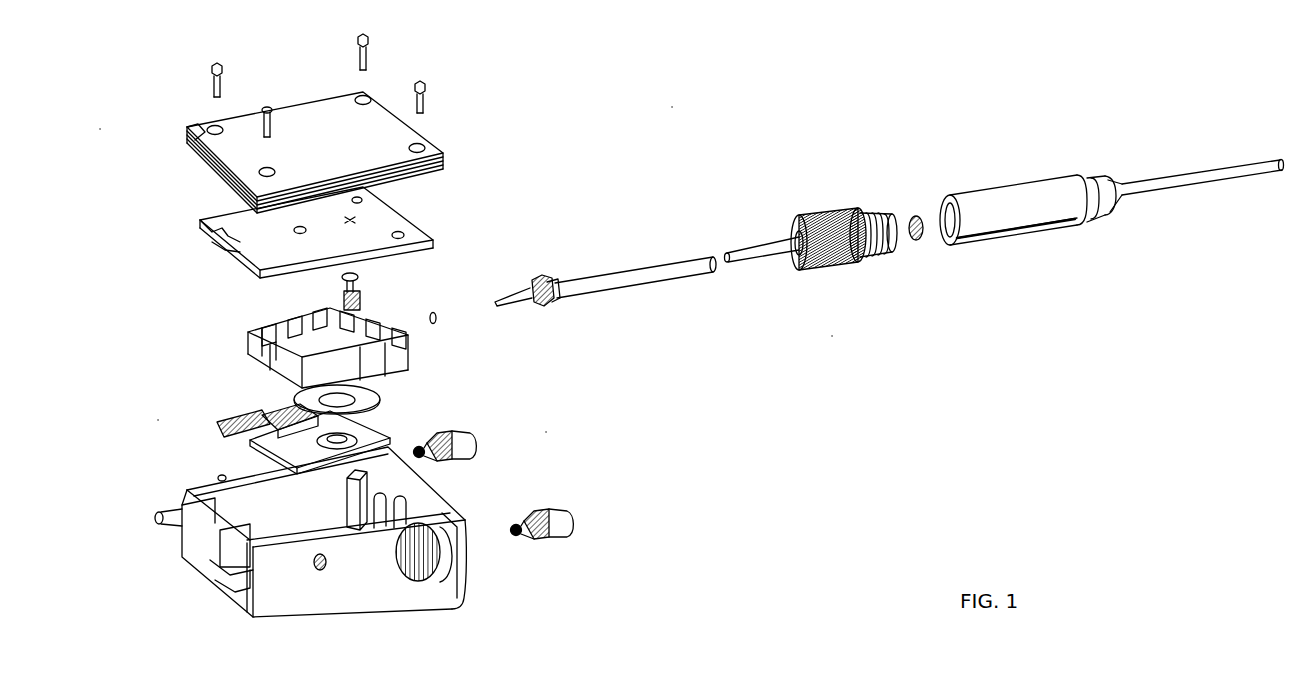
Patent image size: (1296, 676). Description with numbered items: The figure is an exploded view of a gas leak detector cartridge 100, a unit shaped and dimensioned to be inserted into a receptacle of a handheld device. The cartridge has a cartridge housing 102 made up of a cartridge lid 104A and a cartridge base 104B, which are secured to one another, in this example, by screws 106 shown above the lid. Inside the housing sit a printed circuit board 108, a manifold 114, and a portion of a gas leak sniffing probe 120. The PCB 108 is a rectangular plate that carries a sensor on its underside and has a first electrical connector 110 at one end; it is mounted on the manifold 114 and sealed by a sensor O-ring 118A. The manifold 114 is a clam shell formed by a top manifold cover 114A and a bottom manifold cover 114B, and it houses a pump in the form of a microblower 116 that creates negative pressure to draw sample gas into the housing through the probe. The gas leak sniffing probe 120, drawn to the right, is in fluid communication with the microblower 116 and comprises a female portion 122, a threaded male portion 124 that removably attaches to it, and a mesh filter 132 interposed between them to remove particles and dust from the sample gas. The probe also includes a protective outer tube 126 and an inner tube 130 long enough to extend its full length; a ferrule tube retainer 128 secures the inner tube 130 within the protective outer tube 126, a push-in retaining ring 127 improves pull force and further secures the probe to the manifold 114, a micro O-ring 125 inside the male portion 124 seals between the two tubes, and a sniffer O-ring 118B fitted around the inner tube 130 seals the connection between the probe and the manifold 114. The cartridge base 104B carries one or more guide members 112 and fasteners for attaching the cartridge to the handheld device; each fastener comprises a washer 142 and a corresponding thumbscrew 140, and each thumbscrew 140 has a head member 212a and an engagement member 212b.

The gas leak detector cartridge 100 is at (670, 108).
The cartridge housing 102 is at (100, 129).
The cartridge lid 104A is at (190, 148).
The cartridge base 104B is at (178, 548).
The screws 106 is at (218, 66).
The printed circuit board (PCB) 108 is at (420, 204).
The first electrical connector 110 is at (212, 242).
The guide members 112 is at (225, 586).
The manifold 114 is at (158, 420).
The top manifold cover 114A is at (250, 345).
The bottom manifold cover 114B is at (250, 444).
The microblower 116 is at (380, 401).
The sensor O-ring 118A is at (340, 280).
The sniffer O-ring 118B is at (440, 318).
The gas leak sniffing probe 120 is at (827, 332).
The female portion 122 is at (1040, 234).
The male portion 124 is at (868, 266).
The micro O-ring 125 is at (811, 216).
The protective outer tube 126 is at (660, 260).
The push-in retaining ring 127 is at (553, 272).
The ferrule tube retainer 128 is at (530, 285).
The inner tube 130 is at (500, 297).
The mesh filter 132 is at (916, 216).
The thumbscrews 140 is at (540, 432).
The washers 142 is at (320, 566).
The head member 212a is at (482, 440).
The engagement member 212b is at (516, 527).